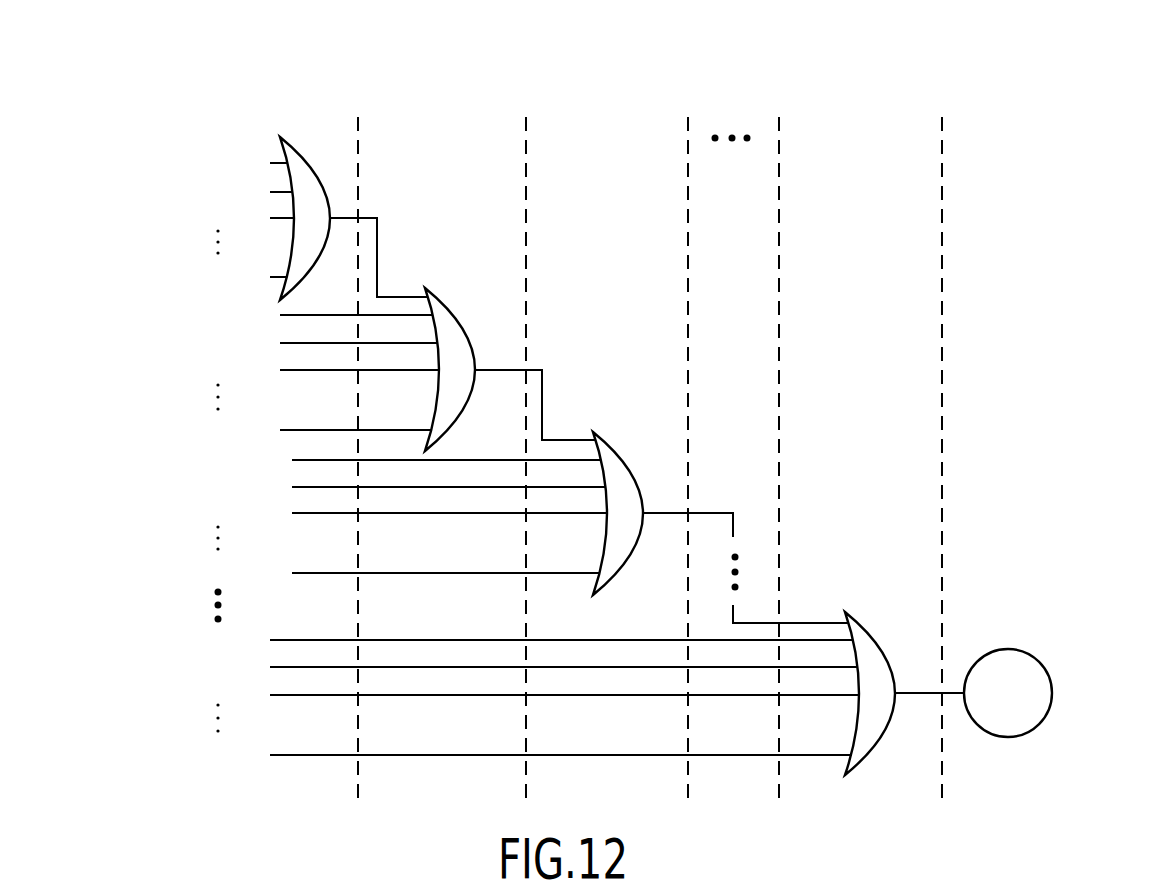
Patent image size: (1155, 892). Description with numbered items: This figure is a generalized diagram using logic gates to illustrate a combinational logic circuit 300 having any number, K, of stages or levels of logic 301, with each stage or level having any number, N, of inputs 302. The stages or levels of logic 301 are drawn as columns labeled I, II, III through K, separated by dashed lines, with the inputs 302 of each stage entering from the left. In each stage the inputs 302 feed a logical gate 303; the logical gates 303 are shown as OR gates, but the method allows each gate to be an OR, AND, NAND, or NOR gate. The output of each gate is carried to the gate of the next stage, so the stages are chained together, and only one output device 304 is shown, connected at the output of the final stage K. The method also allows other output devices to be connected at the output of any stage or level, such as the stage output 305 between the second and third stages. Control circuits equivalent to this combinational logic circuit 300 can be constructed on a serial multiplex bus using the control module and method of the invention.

The combinational logic circuit 300 is at (590, 51).
The stages or levels of logic 301 is at (302, 97).
The inputs 302 is at (146, 158).
The logical gates 303 is at (308, 181).
The output device 304 is at (1028, 652).
The output of a stage or level 305 is at (500, 367).